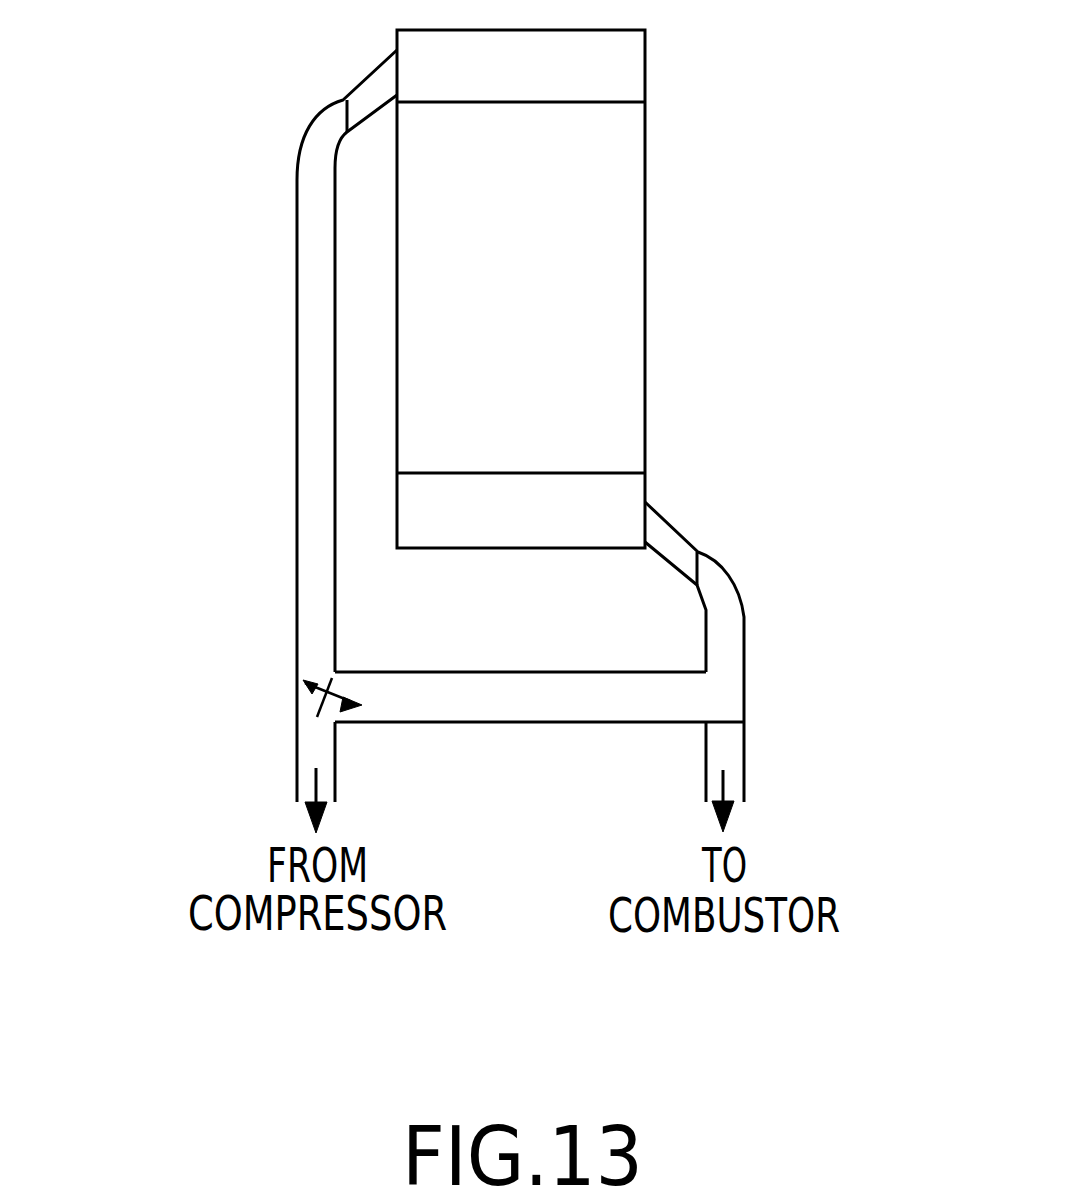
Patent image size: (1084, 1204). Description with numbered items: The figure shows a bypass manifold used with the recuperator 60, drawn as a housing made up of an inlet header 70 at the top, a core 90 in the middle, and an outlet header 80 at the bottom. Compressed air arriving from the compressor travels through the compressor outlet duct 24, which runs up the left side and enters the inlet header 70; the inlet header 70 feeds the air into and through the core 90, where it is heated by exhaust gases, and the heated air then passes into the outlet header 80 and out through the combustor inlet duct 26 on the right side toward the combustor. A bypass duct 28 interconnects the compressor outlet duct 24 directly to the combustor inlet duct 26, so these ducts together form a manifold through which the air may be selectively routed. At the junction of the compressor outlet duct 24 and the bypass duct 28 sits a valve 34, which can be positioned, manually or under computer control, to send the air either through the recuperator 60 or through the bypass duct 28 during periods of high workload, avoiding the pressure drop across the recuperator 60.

The compressor outlet duct 24 is at (297, 392).
The combustor inlet duct 26 is at (745, 618).
The bypass duct 28 is at (503, 712).
The valve 34 is at (332, 678).
The recuperator 60 is at (650, 275).
The recuperator inlet header 70 is at (540, 83).
The outlet header 80 is at (540, 530).
The recuperator core 90 is at (540, 311).